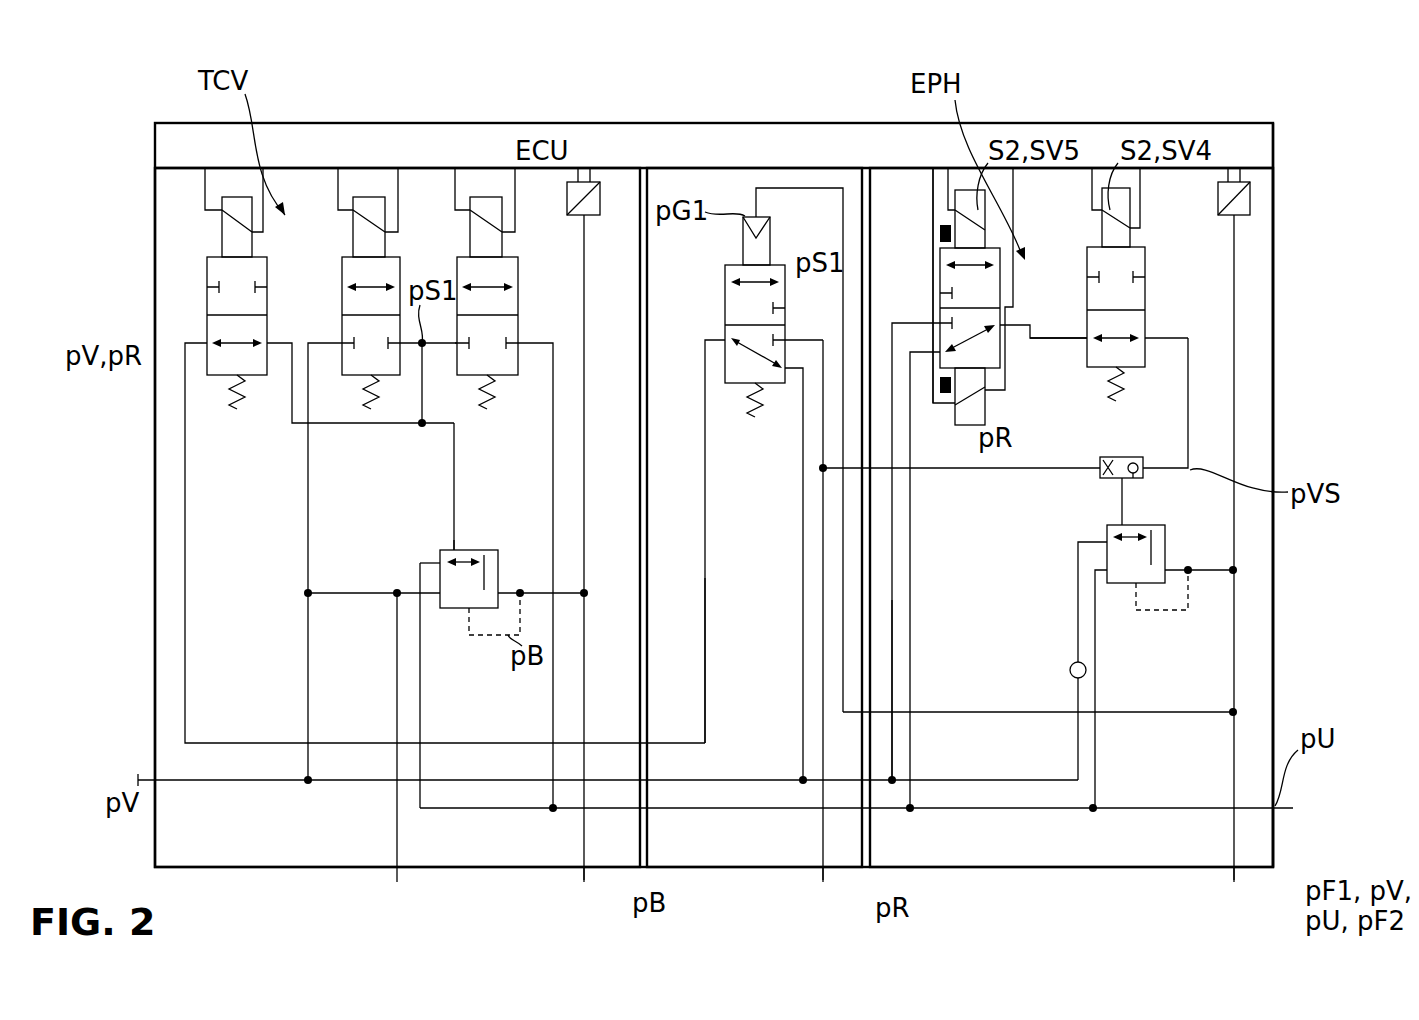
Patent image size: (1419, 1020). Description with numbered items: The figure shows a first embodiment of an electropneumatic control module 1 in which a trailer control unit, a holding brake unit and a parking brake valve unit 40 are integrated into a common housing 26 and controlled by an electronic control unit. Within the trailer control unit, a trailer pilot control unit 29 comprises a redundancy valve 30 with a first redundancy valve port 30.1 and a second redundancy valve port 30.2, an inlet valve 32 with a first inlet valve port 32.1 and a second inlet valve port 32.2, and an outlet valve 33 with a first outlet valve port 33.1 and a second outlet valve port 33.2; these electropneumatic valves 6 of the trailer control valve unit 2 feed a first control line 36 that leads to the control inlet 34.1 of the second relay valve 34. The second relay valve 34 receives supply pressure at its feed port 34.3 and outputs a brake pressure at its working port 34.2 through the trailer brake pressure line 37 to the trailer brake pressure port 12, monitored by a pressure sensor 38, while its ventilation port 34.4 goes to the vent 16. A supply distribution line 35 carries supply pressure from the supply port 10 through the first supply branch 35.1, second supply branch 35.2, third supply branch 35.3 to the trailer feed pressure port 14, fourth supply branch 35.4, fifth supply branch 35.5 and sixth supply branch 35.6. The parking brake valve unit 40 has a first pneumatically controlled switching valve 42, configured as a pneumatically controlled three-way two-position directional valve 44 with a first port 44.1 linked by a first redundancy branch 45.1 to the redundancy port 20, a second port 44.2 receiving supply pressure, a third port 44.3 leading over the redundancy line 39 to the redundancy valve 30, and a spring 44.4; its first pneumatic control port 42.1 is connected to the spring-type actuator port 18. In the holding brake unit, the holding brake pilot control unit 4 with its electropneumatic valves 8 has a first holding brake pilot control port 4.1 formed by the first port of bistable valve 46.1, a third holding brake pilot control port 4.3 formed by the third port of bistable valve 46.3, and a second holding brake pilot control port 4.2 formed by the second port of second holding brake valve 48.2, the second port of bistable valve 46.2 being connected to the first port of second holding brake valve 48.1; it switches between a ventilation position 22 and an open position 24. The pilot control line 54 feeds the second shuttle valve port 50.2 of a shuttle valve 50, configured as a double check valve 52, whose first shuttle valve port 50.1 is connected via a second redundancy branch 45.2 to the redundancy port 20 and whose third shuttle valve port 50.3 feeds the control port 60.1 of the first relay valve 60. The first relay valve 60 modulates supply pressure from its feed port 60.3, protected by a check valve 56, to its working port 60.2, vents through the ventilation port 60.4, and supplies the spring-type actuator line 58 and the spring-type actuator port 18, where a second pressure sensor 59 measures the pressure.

The electropneumatic control module 1 is at (1287, 323).
The trailer control valve unit 2 is at (182, 271).
The holding brake pilot control unit 4 is at (1196, 316).
The first holding brake pilot control port 4.1 is at (944, 355).
The second holding brake pilot control port 4.2 is at (1144, 267).
The third holding brake pilot control port 4.3 is at (937, 325).
The electropneumatic valves of the trailer control valve unit 6 is at (220, 420).
The electropneumatic valves of the holding brake pilot control unit 8 is at (1202, 322).
The supply port 10 is at (152, 780).
The trailer brake pressure port 12 is at (632, 893).
The trailer feed pressure port 14 is at (399, 889).
The vent 16 is at (875, 809).
The spring-type actuator port 18 is at (1300, 893).
The redundancy port 20 is at (873, 895).
The ventilation position 22 is at (975, 380).
The open position 24 is at (975, 268).
The housing 26 is at (1275, 600).
The trailer pilot control unit 29 is at (420, 198).
The redundancy valve 30 is at (205, 272).
The first redundancy valve port 30.1 is at (205, 343).
The second redundancy valve port 30.2 is at (272, 355).
The inlet valve 32 is at (342, 270).
The first inlet valve port 32.1 is at (342, 343).
The second inlet valve port 32.2 is at (433, 334).
The outlet valve 33 is at (518, 290).
The first outlet valve port 33.1 is at (455, 348).
The second outlet valve port 33.2 is at (518, 343).
The second relay valve 34 is at (484, 550).
The control inlet of second relay valve 34.1 is at (450, 550).
The working port of second relay valve 34.2 is at (498, 578).
The feed port of second relay valve 34.3 is at (437, 600).
The ventilation port of second relay valve 34.4 is at (438, 563).
The supply distribution line 35 is at (241, 778).
The first supply branch 35.1 is at (308, 530).
The second supply branch 35.2 is at (397, 597).
The third supply branch 35.3 is at (398, 830).
The fourth supply branch 35.4 is at (820, 715).
The fifth supply branch 35.5 is at (893, 610).
The sixth supply branch 35.6 is at (1076, 690).
The first control line 36 is at (455, 468).
The trailer brake pressure line 37 is at (584, 685).
The pressure sensor 38 is at (588, 217).
The redundancy line 39 is at (706, 578).
The parking brake valve unit 40 is at (730, 195).
The first pneumatically controlled switching valve 42 is at (724, 290).
The first pneumatic control port 42.1 is at (770, 222).
The pneumatically controlled 3/2 directional valve 44 is at (738, 303).
The first port 44.1 is at (782, 340).
The second port 44.2 is at (792, 370).
The third port 44.3 is at (734, 345).
The spring 44.4 is at (752, 407).
The first redundancy branch 45.1 is at (822, 418).
The second redundancy branch 45.2 is at (935, 470).
The first port of bistable valve 46.1 is at (941, 580).
The second port of bistable valve 46.2 is at (1003, 345).
The third port of bistable valve 46.3 is at (910, 509).
The first port of second holding brake valve 48.1 is at (1090, 338).
The second port of second holding brake valve 48.2 is at (1181, 294).
The shuttle valve 50 is at (1100, 470).
The first shuttle valve port 50.1 is at (1103, 460).
The second shuttle valve port 50.2 is at (1137, 478).
The third shuttle valve port 50.3 is at (1125, 480).
The double check valve 52 is at (1054, 484).
The pilot control line 54 is at (1188, 410).
The check valve 56 is at (1086, 680).
The spring-type actuator line 58 is at (1236, 660).
The second pressure sensor 59 is at (1250, 200).
The first relay valve 60 is at (1167, 548).
The control port of first relay valve 60.1 is at (1114, 525).
The working port of first relay valve 60.2 is at (1178, 603).
The feed port of first relay valve 60.3 is at (1105, 545).
The ventilation port of first relay valve 60.4 is at (1097, 590).